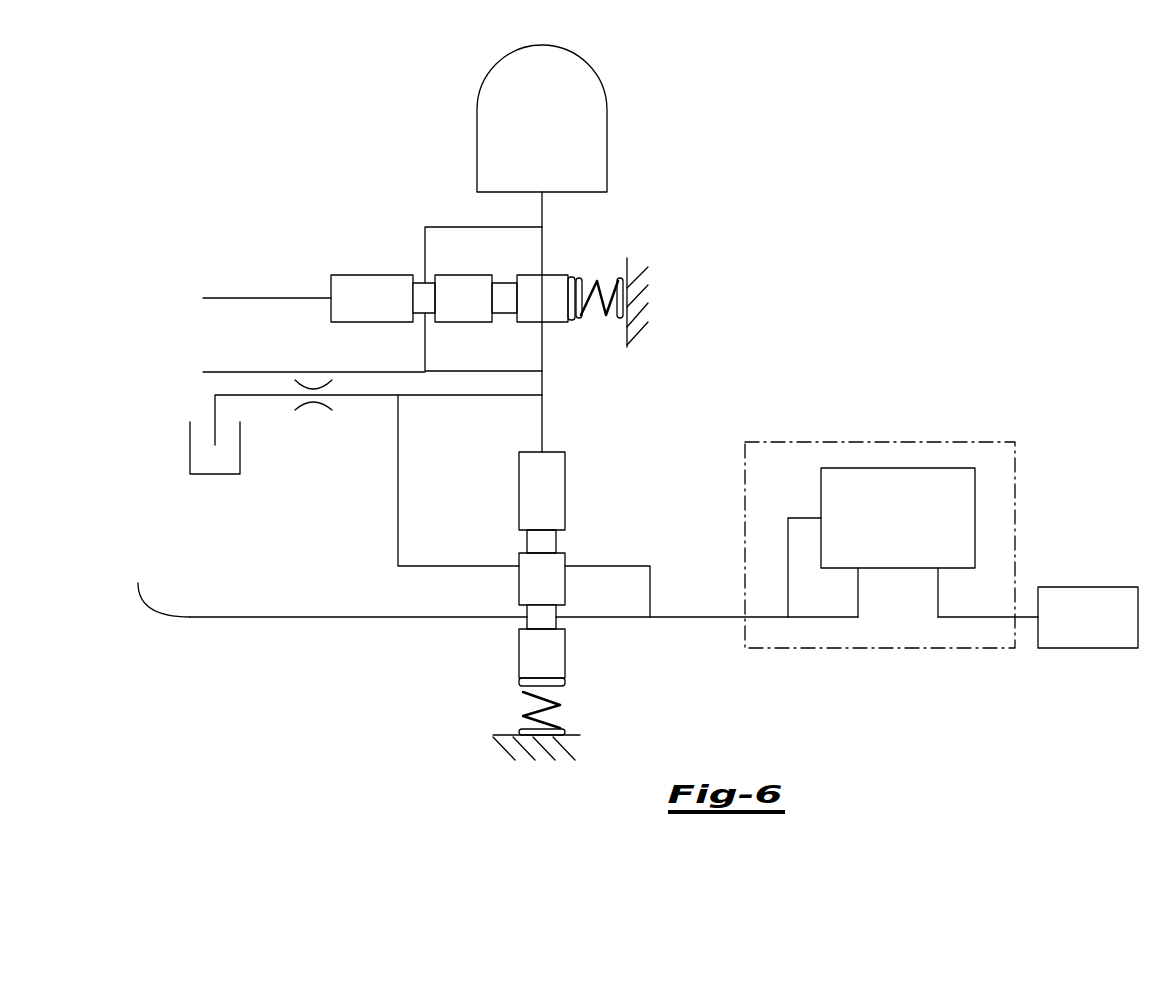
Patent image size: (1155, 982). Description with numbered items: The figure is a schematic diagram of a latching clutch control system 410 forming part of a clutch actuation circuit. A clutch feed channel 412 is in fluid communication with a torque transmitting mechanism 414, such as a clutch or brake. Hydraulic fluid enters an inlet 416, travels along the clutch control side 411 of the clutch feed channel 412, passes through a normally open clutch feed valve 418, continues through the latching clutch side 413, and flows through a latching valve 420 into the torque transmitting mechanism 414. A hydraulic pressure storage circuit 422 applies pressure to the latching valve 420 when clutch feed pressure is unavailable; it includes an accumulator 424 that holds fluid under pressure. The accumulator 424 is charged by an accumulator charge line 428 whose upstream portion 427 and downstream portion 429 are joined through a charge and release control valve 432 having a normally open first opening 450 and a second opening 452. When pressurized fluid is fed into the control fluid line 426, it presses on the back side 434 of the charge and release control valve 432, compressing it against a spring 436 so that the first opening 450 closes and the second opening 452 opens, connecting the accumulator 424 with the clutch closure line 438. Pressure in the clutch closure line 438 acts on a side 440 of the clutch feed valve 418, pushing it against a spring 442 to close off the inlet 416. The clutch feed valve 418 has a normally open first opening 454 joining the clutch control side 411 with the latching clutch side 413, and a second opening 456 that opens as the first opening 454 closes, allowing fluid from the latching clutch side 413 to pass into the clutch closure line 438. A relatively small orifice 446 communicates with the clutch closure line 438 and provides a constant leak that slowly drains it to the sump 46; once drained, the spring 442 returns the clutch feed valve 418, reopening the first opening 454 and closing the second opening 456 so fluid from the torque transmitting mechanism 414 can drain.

The latching clutch control system 410 is at (812, 211).
The clutch control side 411 is at (390, 617).
The clutch feed channel 412 is at (291, 628).
The latching clutch side 413 is at (688, 617).
The torque transmitting mechanism 414 is at (1066, 632).
The inlet 416 is at (157, 585).
The clutch feed valve 418 is at (565, 663).
The latching valve 420 is at (948, 480).
The hydraulic pressure storage circuit 422 is at (565, 232).
The accumulator 424 is at (600, 77).
The control fluid line 426 is at (222, 298).
The upstream portion 427 is at (245, 372).
The accumulator charge line 428 is at (463, 215).
The downstream portion 429 is at (438, 227).
The charge and release control valve 432 is at (358, 275).
The back side 434 is at (331, 311).
The spring 436 is at (602, 318).
The clutch closure line 438 is at (542, 368).
The side 440 is at (533, 452).
The spring 442 is at (517, 720).
The orifice 446 is at (312, 418).
The first opening 450 is at (418, 313).
The second opening 452 is at (502, 313).
The first opening 454 is at (527, 620).
The second opening 456 is at (556, 540).
The sump 46 is at (190, 448).